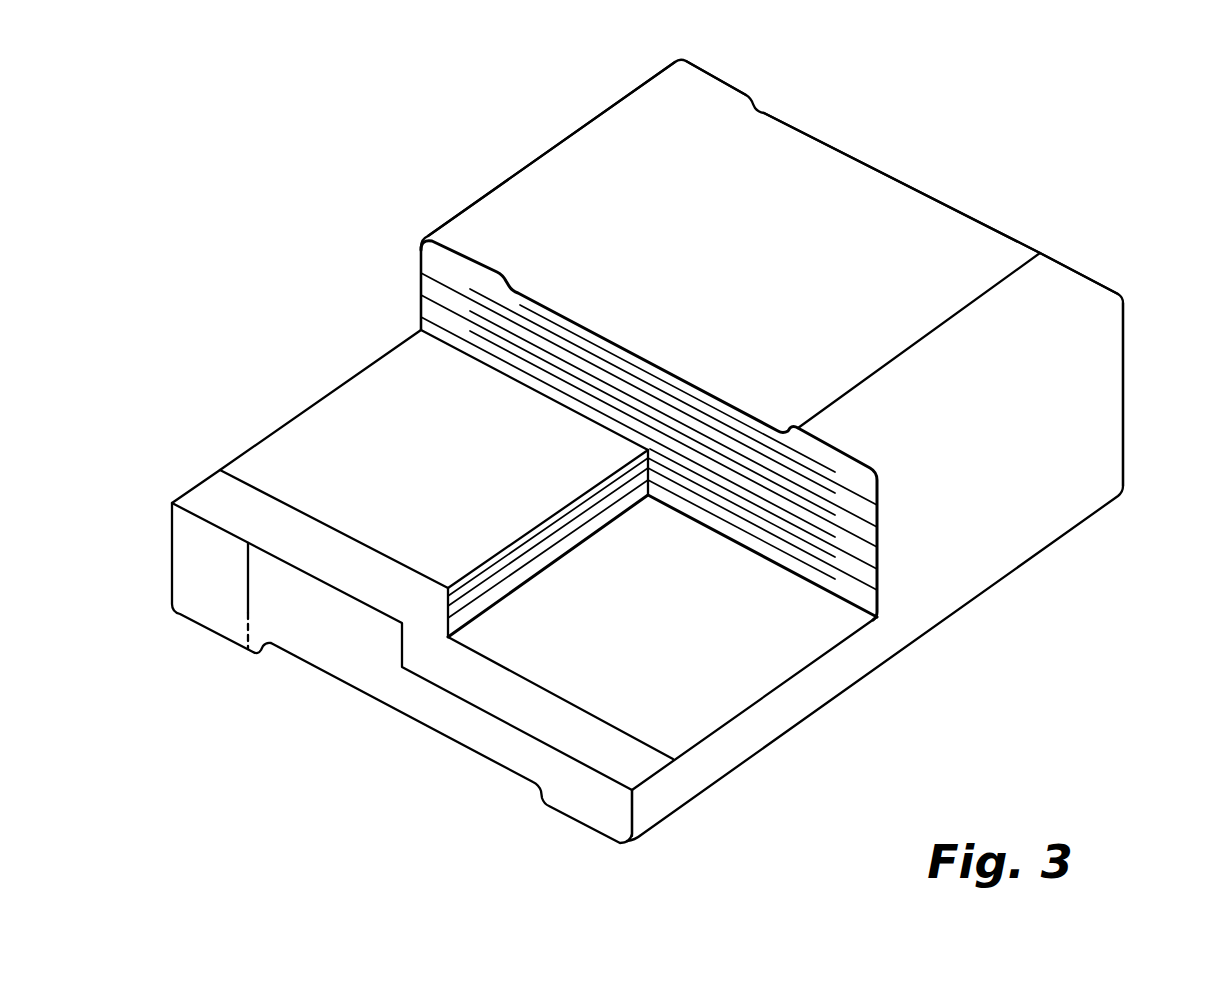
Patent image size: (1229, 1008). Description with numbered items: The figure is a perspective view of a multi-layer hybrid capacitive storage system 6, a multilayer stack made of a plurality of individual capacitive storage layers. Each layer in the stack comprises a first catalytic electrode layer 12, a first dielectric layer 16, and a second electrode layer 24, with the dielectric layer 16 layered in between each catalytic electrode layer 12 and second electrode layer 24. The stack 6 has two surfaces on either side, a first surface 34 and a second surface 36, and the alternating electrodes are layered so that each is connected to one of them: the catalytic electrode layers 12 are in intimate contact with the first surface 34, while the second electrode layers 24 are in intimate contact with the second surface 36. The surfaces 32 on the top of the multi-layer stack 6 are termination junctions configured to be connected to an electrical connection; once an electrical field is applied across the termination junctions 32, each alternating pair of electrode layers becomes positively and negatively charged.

The multi-layer hybrid capacitive storage system 6 is at (943, 151).
The first catalytic electrode layer 12 is at (476, 293).
The first dielectric layer 16 is at (322, 628).
The second electrode layer 24 is at (327, 414).
The termination junction 32 is at (645, 107).
The first surface 34 is at (420, 250).
The second surface 36 is at (1096, 437).